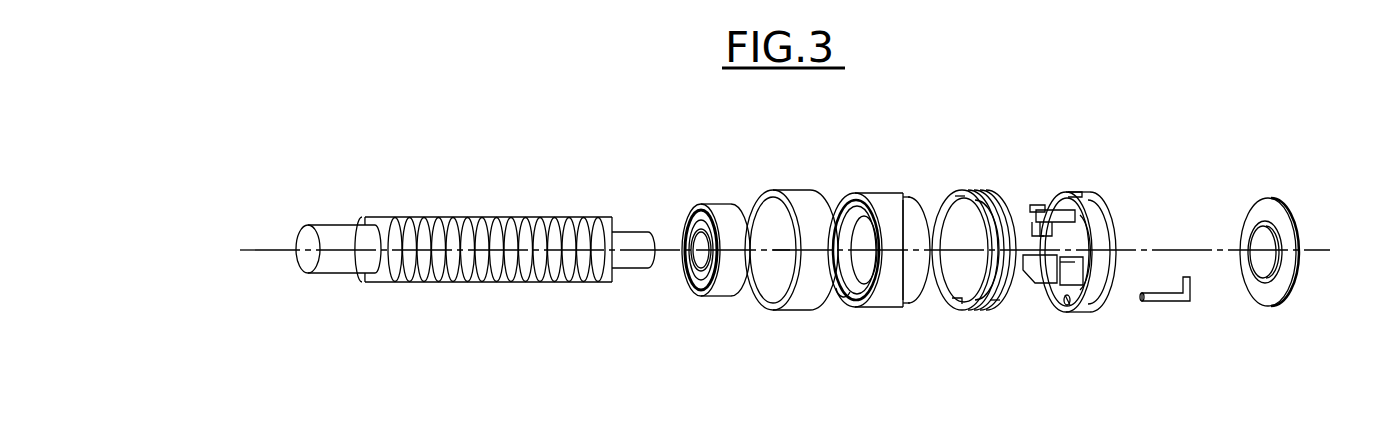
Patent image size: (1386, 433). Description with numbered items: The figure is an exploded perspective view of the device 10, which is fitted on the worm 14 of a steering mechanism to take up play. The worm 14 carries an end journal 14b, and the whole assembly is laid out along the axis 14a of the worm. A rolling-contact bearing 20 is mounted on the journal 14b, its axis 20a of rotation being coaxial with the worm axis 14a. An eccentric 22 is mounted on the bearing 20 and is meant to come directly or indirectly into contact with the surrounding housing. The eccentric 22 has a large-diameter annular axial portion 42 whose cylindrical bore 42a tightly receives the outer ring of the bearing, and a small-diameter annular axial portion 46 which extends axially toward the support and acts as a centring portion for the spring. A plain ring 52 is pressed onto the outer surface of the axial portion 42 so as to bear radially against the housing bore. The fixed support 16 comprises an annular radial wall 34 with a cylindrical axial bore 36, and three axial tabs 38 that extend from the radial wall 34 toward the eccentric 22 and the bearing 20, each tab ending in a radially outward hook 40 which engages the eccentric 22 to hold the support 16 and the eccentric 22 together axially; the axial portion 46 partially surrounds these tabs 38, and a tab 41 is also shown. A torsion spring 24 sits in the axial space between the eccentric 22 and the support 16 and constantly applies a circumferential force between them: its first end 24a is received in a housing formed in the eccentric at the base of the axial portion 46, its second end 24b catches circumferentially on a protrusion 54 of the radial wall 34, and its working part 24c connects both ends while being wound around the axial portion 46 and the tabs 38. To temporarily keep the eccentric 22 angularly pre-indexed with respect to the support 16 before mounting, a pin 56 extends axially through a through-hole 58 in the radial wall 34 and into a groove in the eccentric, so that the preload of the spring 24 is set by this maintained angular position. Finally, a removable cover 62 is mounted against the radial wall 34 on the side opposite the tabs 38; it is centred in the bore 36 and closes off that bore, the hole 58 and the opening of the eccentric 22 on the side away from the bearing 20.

The device 10 is at (852, 157).
The worm 14 is at (451, 212).
The axis of the worm 14a is at (235, 249).
The end journal 14b is at (638, 235).
The support 16 is at (1075, 312).
The rolling-contact bearing 20 is at (712, 297).
The axis of rotation of the bearing 20a is at (296, 250).
The eccentric 22 is at (862, 310).
The torsion spring 24 is at (982, 313).
The first end of the spring 24a is at (946, 306).
The second end of the spring 24b is at (948, 204).
The working part of the spring 24c is at (1004, 306).
The annular radial wall 34 is at (1098, 230).
The cylindrical axial bore 36 is at (1098, 226).
The axial tabs 38 is at (1071, 208).
The hook 40 is at (1042, 205).
The tab 41 is at (1080, 195).
The large-diameter annular axial portion 42 is at (873, 200).
The cylindrical bore 42a is at (838, 303).
The small-diameter annular axial portion 46 is at (906, 208).
The plain ring 52 is at (782, 308).
The protrusion 54 is at (1020, 214).
The pin 56 is at (1166, 305).
The through-hole 58 is at (1057, 300).
The removable cover 62 is at (1281, 203).